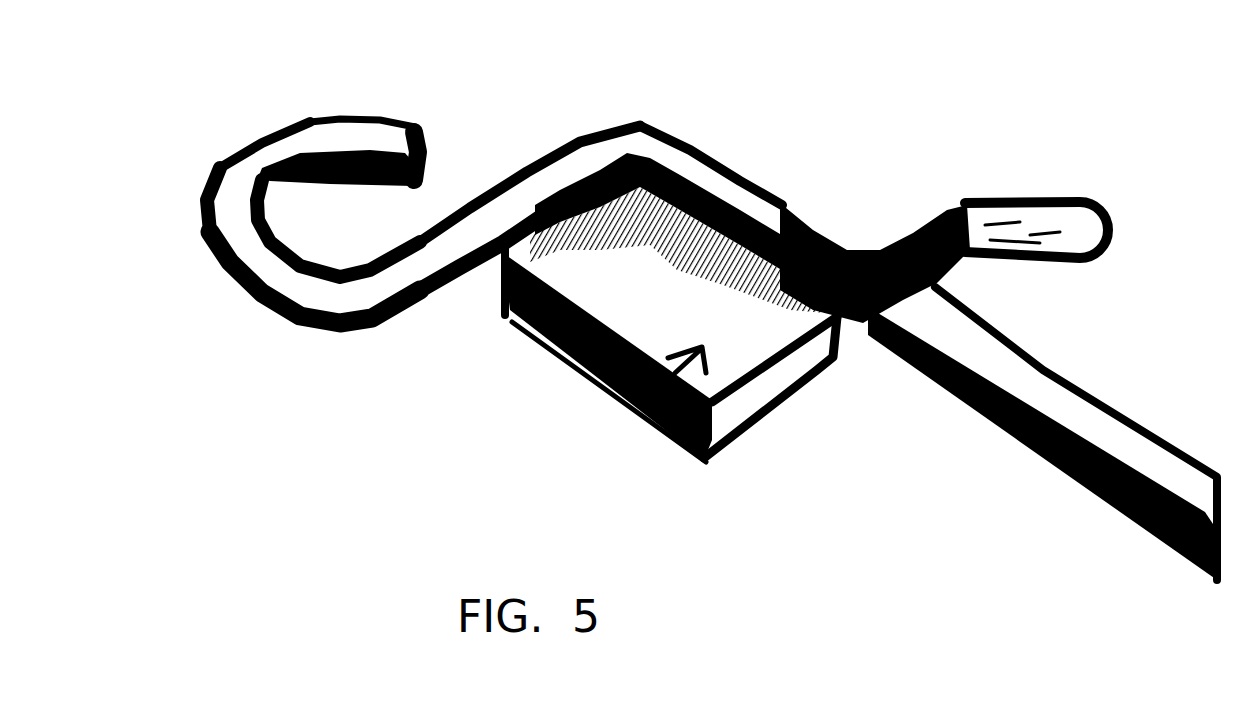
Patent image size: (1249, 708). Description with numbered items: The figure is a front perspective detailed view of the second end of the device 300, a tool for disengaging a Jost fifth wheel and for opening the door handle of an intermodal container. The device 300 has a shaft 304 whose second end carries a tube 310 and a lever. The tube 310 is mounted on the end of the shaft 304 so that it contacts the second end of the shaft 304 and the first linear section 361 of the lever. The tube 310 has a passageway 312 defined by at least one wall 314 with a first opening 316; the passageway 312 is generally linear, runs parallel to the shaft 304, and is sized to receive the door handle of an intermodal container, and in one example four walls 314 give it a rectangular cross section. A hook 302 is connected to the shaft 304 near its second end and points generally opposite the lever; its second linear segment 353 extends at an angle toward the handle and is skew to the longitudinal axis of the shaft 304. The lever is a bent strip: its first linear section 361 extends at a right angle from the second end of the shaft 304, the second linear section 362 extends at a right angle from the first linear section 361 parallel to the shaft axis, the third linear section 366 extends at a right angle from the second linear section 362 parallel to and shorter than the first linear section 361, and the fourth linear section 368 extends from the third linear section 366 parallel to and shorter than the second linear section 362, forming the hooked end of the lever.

The device 300 is at (290, 487).
The hook 302 is at (1080, 156).
The shaft 304 is at (1113, 430).
The second linear segment 353 is at (1112, 236).
The tube 310 is at (652, 302).
The passageway 312 is at (790, 370).
The wall 314 is at (592, 363).
The first opening 316 is at (737, 407).
The first linear section 361 is at (437, 258).
The second linear section 362 is at (277, 267).
The third linear section 366 is at (258, 157).
The fourth linear section 368 is at (392, 157).